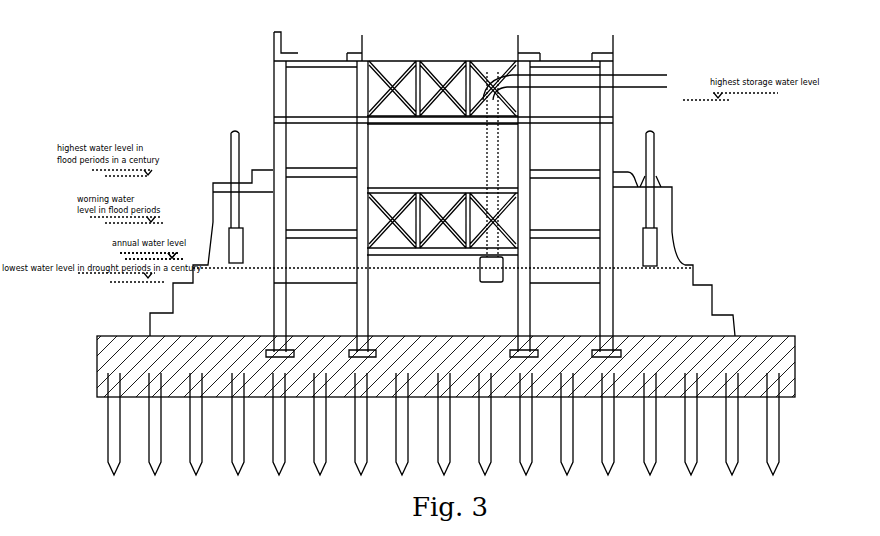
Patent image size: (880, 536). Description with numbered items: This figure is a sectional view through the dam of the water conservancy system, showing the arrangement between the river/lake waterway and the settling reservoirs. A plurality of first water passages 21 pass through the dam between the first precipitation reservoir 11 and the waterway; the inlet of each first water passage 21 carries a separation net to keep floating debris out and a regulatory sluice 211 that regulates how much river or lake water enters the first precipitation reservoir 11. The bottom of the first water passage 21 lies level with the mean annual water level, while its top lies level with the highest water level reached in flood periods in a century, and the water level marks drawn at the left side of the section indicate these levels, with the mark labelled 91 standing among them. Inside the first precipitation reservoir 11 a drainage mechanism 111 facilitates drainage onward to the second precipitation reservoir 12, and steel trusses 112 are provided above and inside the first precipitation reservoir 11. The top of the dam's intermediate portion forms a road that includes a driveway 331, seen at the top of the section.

The first precipitation reservoir 11 is at (459, 177).
The second precipitation reservoir 12 is at (679, 233).
The first water passage 21 is at (220, 228).
The regulatory sluice 211 is at (230, 130).
The annual water level 91 is at (131, 248).
The drainage mechanism 111 is at (667, 87).
The steel trusses 112 is at (437, 85).
The driveway 331 is at (443, 46).